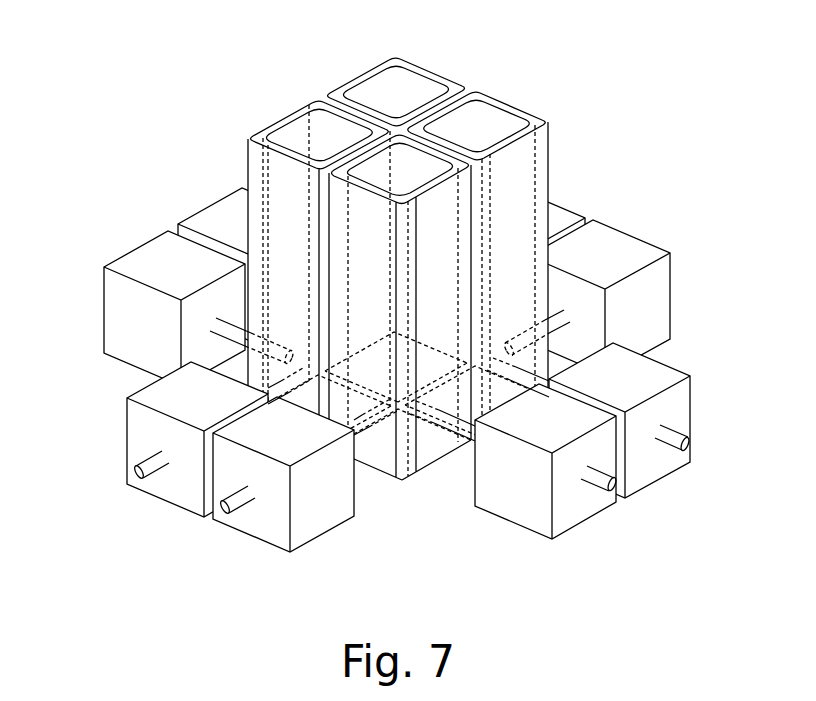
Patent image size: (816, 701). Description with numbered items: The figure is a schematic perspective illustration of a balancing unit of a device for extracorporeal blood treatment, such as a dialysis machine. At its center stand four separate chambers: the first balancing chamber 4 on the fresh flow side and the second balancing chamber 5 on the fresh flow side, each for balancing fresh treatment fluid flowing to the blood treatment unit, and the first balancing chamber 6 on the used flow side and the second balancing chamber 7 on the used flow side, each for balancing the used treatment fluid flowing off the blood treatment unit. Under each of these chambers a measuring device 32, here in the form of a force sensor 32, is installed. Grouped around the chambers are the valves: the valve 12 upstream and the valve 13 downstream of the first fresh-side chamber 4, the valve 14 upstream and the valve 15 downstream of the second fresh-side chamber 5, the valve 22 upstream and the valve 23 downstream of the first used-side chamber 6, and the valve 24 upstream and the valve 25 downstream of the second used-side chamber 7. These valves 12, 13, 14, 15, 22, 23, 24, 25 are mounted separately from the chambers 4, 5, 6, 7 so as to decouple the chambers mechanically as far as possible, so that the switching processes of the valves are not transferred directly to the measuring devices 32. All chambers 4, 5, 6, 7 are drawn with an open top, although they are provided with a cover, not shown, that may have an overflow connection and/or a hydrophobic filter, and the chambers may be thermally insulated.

The first balancing chamber on the fresh flow side 4 is at (403, 95).
The second balancing chamber on the fresh flow side 5 is at (485, 132).
The first balancing chamber on the used flow side 6 is at (293, 130).
The second balancing chamber on the used flow side 7 is at (404, 170).
The valve 12 is at (223, 215).
The valve 13 is at (558, 217).
The valve 14 is at (613, 255).
The valve 15 is at (667, 377).
The valve 22 is at (163, 265).
The valve 23 is at (153, 398).
The valve 24 is at (323, 512).
The valve 25 is at (568, 502).
The measuring device 32 is at (288, 395).